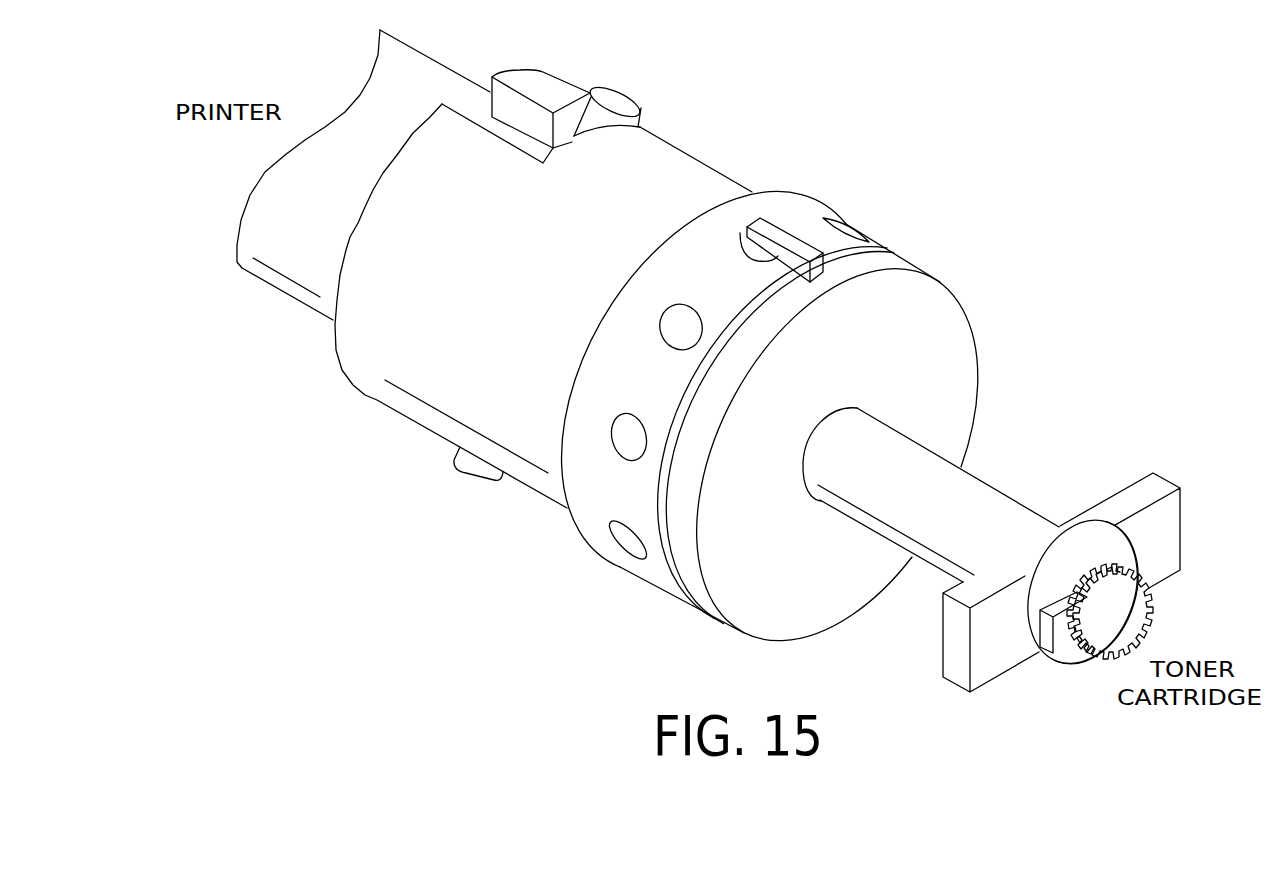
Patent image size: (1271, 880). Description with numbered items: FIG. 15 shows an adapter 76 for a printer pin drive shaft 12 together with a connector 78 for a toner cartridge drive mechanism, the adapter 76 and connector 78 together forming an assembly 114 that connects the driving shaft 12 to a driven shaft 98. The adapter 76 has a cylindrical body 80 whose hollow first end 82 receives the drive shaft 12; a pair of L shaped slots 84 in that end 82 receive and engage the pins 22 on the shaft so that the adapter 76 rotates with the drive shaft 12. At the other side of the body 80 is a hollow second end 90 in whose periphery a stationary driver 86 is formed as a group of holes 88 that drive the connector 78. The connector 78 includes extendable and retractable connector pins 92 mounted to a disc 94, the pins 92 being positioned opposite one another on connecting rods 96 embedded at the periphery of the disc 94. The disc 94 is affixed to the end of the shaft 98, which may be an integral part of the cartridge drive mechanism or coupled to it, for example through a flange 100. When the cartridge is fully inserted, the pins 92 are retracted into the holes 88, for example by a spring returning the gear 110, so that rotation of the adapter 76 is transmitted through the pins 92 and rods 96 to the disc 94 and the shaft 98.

The printer pin drive shaft 12 is at (417, 72).
The pins 22 is at (617, 100).
The adapter 76 is at (726, 100).
The connector 78 is at (1019, 390).
The cylindrical body 80 is at (688, 175).
The hollow first end 82 is at (362, 207).
The L shaped slots 84 is at (563, 125).
The stationary driver 86 is at (672, 327).
The holes 88 is at (623, 435).
The hollow second end 90 is at (675, 273).
The connector pins 92 is at (740, 241).
The disc 94 is at (880, 263).
The connecting rods 96 is at (813, 270).
The shaft 98 is at (1003, 507).
The flange 100 is at (1152, 492).
The gear 110 is at (1143, 595).
The assembly 114 is at (647, 638).